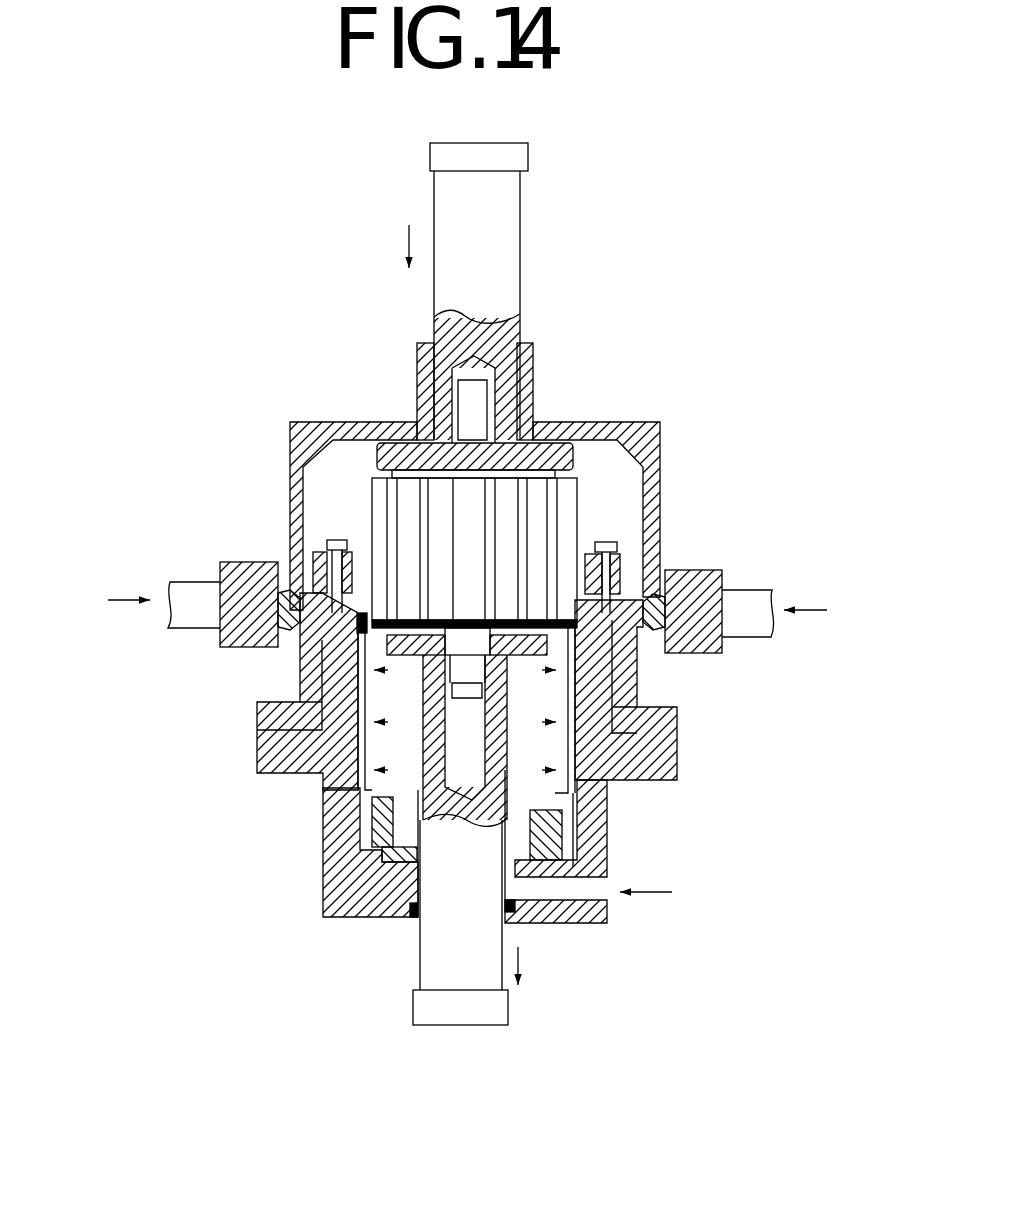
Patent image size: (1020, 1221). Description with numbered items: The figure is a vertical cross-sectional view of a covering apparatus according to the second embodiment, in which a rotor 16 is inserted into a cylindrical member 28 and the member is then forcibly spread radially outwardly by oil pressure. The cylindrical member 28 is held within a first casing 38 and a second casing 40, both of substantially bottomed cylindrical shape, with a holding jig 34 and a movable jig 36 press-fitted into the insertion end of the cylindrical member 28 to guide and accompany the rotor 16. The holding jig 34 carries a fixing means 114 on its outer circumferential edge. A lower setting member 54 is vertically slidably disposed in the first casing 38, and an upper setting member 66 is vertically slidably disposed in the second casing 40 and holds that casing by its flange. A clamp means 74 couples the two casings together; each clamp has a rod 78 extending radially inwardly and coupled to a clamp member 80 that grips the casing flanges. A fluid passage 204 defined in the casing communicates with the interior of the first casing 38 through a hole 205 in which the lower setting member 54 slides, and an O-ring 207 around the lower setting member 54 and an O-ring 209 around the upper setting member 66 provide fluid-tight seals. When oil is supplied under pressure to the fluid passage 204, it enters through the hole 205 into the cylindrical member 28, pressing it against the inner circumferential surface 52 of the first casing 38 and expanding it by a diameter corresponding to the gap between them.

The rotor 16 is at (596, 496).
The cylindrical member 28 is at (327, 767).
The holding jig 34 is at (360, 578).
The movable jig 36 is at (297, 670).
The first casing 38 is at (687, 737).
The second casing 40 is at (646, 411).
The inner circumferential surface 52 is at (545, 760).
The lower setting member 54 is at (430, 943).
The upper setting member 66 is at (505, 279).
The clamp means 74 is at (176, 644).
The rod 78 is at (193, 592).
The clamp member 80 is at (252, 568).
The fixing means 114 is at (315, 543).
The fluid passage 204 is at (562, 892).
The hole 205 is at (413, 880).
The O-ring 207 is at (514, 915).
The O-ring 209 is at (524, 386).